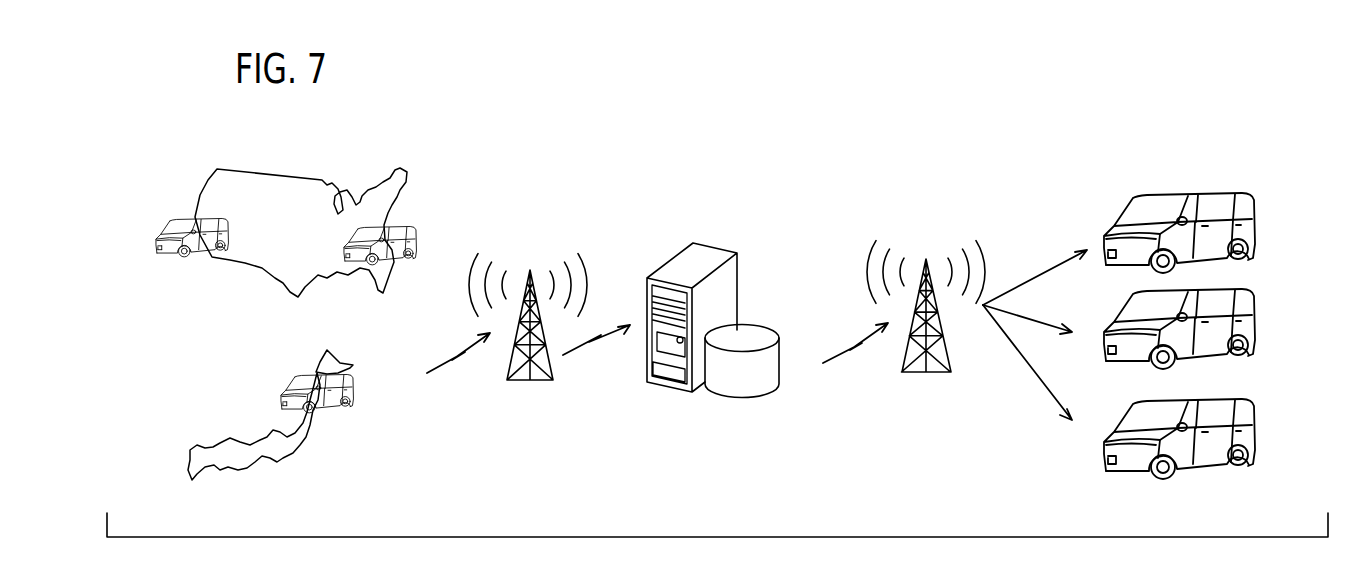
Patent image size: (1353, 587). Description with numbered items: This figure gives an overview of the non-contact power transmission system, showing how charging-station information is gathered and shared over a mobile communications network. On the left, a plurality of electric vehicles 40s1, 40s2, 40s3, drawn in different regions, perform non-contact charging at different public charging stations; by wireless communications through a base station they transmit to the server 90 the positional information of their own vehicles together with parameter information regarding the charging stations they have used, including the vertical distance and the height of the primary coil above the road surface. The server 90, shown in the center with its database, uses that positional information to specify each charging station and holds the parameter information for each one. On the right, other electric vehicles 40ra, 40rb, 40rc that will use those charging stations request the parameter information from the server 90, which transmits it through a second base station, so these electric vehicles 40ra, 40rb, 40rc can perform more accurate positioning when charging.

The electric vehicle 40s1 is at (176, 225).
The electric vehicle 40s2 is at (413, 237).
The electric vehicle 40s3 is at (283, 392).
The server 90 is at (668, 259).
The electric vehicle 40ra is at (1256, 226).
The electric vehicle 40rb is at (1256, 322).
The electric vehicle 40rc is at (1256, 432).